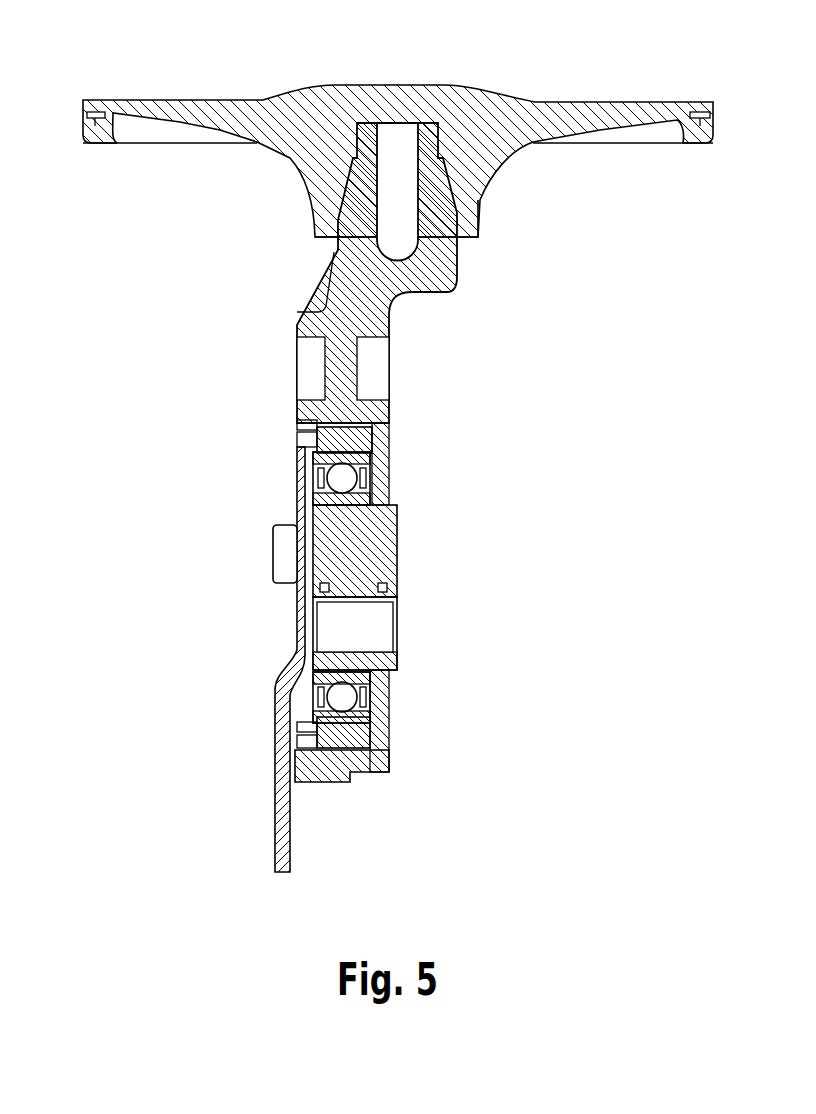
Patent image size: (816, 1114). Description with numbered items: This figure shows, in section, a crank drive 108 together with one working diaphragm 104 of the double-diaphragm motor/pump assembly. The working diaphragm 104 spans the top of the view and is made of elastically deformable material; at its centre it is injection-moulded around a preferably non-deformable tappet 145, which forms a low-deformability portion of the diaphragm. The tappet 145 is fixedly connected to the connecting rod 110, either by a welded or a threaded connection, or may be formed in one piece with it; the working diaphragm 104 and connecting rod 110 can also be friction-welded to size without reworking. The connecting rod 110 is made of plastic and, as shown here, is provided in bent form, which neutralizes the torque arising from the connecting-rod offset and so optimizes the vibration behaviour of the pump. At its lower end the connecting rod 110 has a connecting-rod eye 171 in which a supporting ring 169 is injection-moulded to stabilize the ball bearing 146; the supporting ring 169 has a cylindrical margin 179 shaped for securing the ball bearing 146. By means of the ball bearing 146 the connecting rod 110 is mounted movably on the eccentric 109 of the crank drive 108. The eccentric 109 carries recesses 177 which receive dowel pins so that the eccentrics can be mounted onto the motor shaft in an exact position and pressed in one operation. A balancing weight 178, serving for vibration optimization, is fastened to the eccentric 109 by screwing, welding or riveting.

The working diaphragm 104 is at (245, 115).
The tappet 145 is at (463, 175).
The connecting rod 110 is at (437, 265).
The supporting ring 169 is at (358, 441).
The cylindrical margin 179 is at (313, 460).
The crank drive 108 is at (510, 479).
The eccentric 109 is at (375, 538).
The recess 177 is at (317, 590).
The ball bearing 146 is at (387, 717).
The connecting-rod eye 171 is at (387, 742).
The balancing weight 178 is at (276, 825).